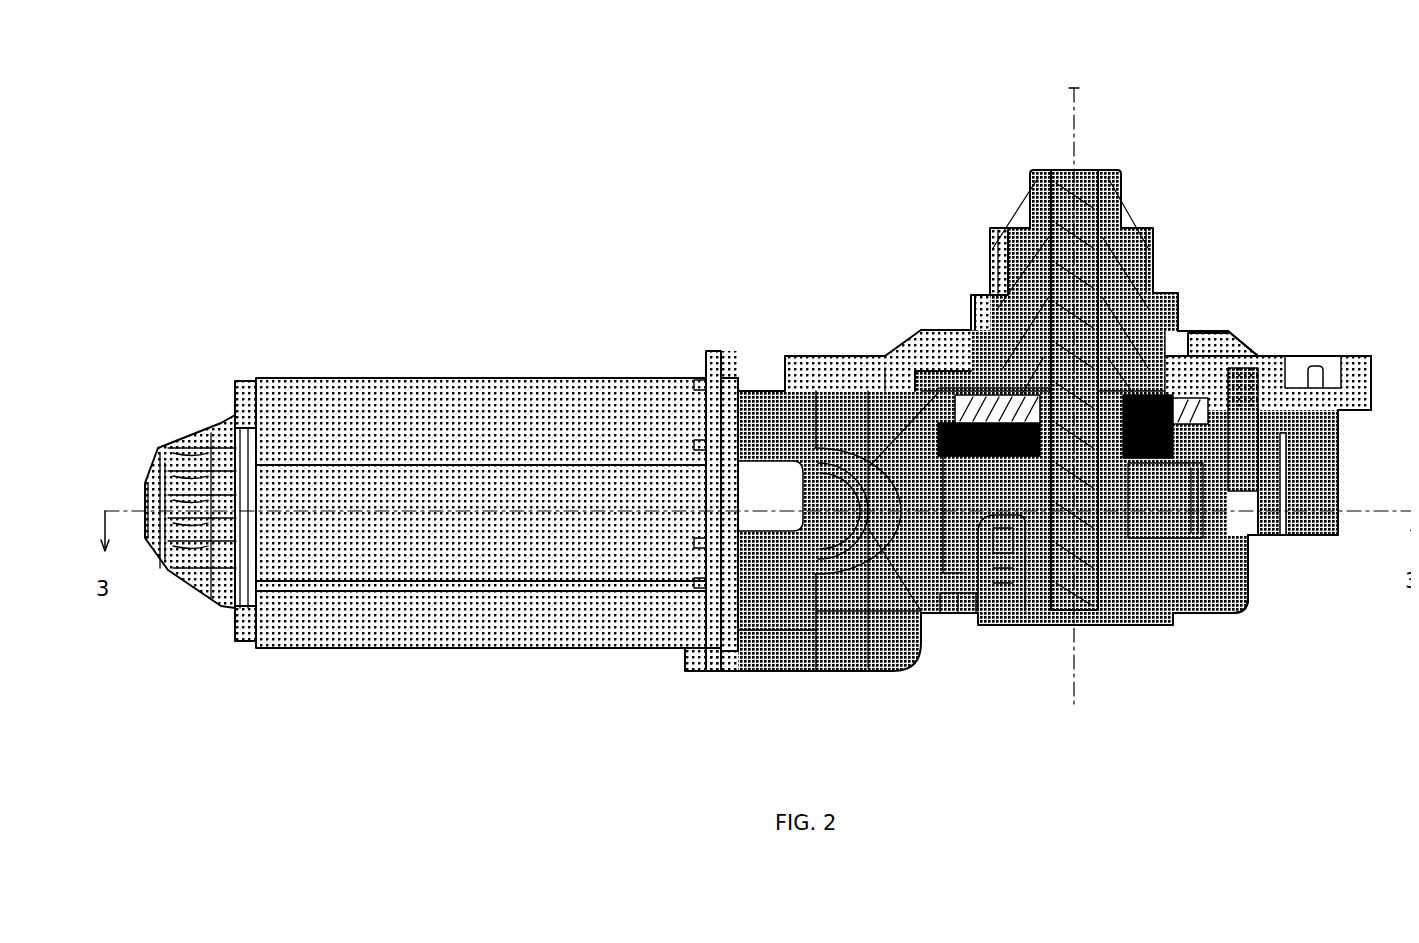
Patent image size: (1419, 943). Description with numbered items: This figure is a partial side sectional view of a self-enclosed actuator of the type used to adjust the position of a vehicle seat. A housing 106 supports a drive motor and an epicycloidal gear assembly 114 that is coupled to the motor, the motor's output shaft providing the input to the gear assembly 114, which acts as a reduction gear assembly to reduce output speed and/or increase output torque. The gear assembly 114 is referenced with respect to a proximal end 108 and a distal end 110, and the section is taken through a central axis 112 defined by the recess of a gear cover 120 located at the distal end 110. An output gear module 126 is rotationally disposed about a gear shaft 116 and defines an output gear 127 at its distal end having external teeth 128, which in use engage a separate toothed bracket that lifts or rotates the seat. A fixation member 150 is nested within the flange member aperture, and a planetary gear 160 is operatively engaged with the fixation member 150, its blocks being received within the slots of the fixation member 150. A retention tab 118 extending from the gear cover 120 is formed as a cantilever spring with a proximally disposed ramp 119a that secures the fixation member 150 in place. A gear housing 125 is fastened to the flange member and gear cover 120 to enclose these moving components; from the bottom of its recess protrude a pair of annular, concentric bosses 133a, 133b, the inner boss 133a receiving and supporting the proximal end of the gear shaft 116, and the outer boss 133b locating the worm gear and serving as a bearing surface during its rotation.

The housing 106 is at (440, 370).
The proximal end 108 is at (1082, 777).
The distal end 110 is at (1078, 42).
The central axis 112 is at (1068, 90).
The epicycloidal gear assembly 114 is at (1260, 165).
The gear shaft 116 is at (1118, 175).
The retention tab 118 is at (1332, 418).
The ramp 119a is at (1243, 545).
The gear cover 120 is at (1237, 345).
The gear housing 125 is at (1235, 600).
The output gear module 126 is at (1145, 240).
The output gear 127 is at (1072, 262).
The external teeth 128 is at (983, 247).
The inner boss 133a is at (1000, 622).
The outer boss 133b is at (952, 608).
The fixation member 150 is at (1332, 458).
The planetary gear 160 is at (1185, 325).